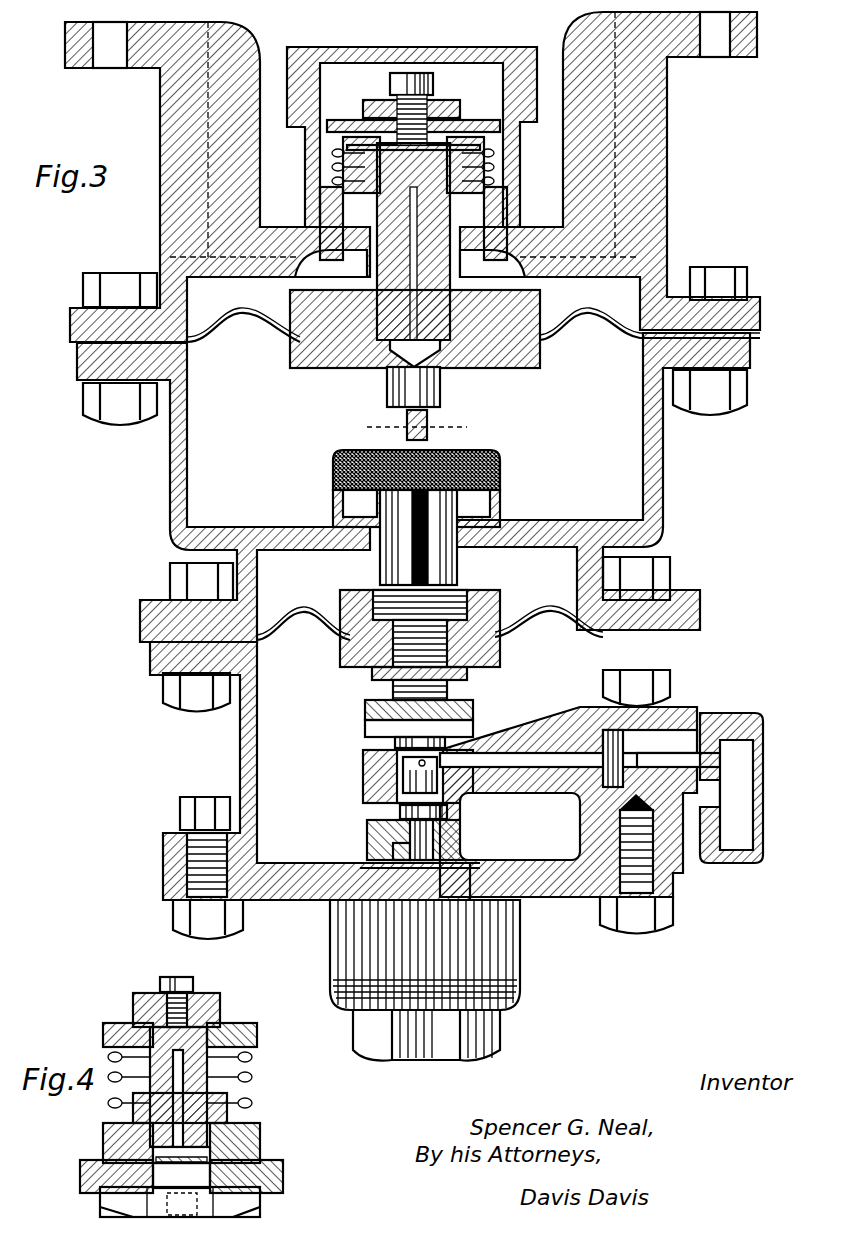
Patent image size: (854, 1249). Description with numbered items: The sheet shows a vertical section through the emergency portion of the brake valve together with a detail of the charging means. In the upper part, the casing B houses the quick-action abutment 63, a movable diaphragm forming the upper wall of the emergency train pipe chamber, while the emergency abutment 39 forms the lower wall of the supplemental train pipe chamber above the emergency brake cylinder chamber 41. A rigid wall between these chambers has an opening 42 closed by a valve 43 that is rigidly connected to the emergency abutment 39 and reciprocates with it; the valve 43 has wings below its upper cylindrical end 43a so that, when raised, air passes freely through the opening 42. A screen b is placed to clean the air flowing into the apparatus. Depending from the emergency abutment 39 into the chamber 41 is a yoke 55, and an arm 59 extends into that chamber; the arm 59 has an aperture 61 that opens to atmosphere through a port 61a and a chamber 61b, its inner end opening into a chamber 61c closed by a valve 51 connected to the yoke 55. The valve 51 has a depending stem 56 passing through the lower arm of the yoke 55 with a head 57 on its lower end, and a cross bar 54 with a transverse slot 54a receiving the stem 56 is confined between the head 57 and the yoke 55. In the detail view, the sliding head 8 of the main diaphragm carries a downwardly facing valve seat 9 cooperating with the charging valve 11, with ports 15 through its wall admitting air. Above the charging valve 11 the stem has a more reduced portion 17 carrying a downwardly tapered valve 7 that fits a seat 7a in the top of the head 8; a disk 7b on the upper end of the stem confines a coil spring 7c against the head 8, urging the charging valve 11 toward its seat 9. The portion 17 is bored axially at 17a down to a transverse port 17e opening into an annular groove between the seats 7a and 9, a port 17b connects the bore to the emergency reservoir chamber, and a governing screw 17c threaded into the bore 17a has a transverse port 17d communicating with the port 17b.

In FIG. 3, the casing B is at (412, 254).
In FIG. 3, the quick-action abutment 63 is at (252, 348).
In FIG. 3, the screen b is at (335, 452).
In FIG. 3, the upper cylindrical end of valve 43a is at (500, 478).
In FIG. 3, the opening 42 is at (383, 568).
In FIG. 3, the valve 43 is at (440, 568).
In FIG. 3, the emergency abutment 39 is at (300, 614).
In FIG. 3, the emergency brake cylinder chamber 41 is at (275, 728).
In FIG. 3, the aperture 61 is at (535, 757).
In FIG. 3, the port 61a is at (700, 748).
In FIG. 3, the chamber 61b is at (758, 822).
In FIG. 3, the chamber 61c is at (415, 766).
In FIG. 3, the valve 51 is at (400, 792).
In FIG. 3, the yoke 55 is at (390, 830).
In FIG. 3, the cross bar 54 is at (450, 845).
In FIG. 3, the transverse slot 54a is at (393, 848).
In FIG. 3, the arm 59 is at (540, 790).
In FIG. 3, the stem 56 is at (525, 900).
In FIG. 3, the head 57 is at (520, 908).
In FIG. 4, the governing screw 17c is at (160, 992).
In FIG. 4, the reduced portion of stem 17 is at (220, 1005).
In FIG. 4, the disk 7b is at (257, 1025).
In FIG. 4, the port 17b is at (145, 1060).
In FIG. 4, the coil spring 7c is at (250, 1058).
In FIG. 4, the transverse port 17d is at (183, 1060).
In FIG. 4, the valve 7 is at (227, 1105).
In FIG. 4, the sliding head 8 is at (103, 1135).
In FIG. 4, the valve seat 7a is at (260, 1138).
In FIG. 4, the axial bore 17a is at (155, 1152).
In FIG. 4, the valve seat 9 is at (283, 1165).
In FIG. 4, the transverse port 17e is at (160, 1167).
In FIG. 4, the charging valve 11 is at (262, 1200).
In FIG. 4, the ports 15 is at (110, 1212).